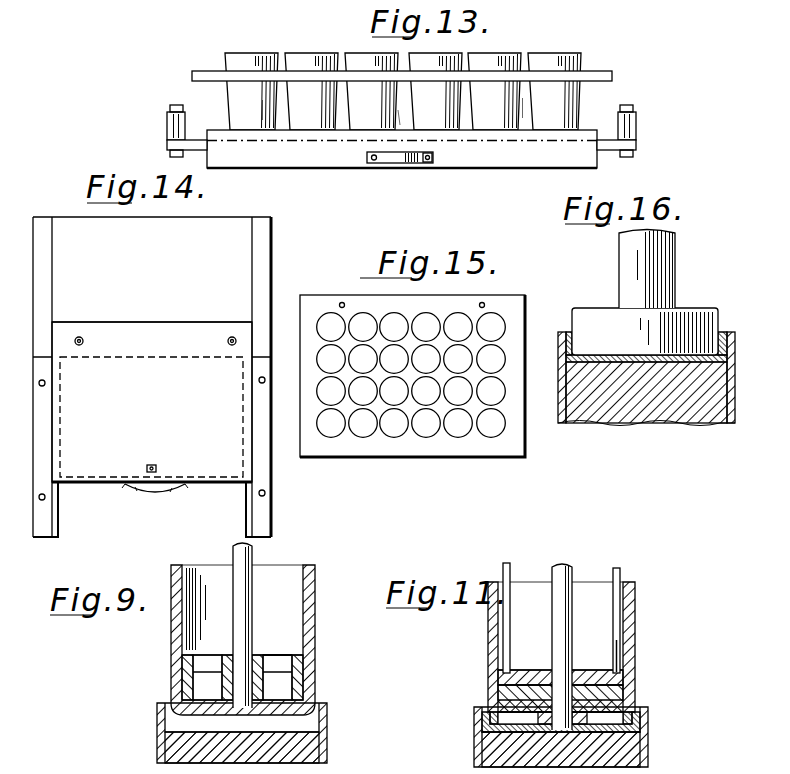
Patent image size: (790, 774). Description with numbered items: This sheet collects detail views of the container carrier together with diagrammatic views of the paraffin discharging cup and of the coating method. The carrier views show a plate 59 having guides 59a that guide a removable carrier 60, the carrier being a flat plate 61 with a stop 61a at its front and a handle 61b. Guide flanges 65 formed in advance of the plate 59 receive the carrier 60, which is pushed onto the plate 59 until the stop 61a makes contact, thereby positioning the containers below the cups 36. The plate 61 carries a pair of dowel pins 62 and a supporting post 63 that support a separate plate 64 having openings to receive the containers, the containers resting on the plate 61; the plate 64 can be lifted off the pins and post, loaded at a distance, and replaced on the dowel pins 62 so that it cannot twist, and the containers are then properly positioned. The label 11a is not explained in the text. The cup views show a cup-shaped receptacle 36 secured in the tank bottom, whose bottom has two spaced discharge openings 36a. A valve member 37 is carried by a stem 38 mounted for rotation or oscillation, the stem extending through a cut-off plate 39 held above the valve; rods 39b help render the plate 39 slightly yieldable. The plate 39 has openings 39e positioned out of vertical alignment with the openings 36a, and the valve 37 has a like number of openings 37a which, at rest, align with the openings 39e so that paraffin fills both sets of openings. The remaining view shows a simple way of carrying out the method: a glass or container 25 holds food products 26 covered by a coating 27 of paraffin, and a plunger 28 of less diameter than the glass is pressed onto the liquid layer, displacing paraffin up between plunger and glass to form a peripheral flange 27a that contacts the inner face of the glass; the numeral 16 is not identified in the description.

In FIG. 14, the tray holder 11a is at (165, 224).
In FIG. 16, the plunger rod 16 is at (673, 269).
In FIG. 13, the glass or container 25 is at (331, 52).
In FIG. 16, the glass or container 25 is at (735, 411).
In FIG. 9, the glass or container 25 is at (157, 720).
In FIG. 11, the glass or container 25 is at (474, 742).
In FIG. 16, the food products 26 is at (663, 428).
In FIG. 9, the food products 26 is at (300, 742).
In FIG. 11, the food products 26 is at (648, 766).
In FIG. 16, the coating 27 is at (690, 362).
In FIG. 11, the coating 27 is at (648, 742).
In FIG. 16, the flange 27a is at (720, 345).
In FIG. 11, the flange 27a is at (486, 717).
In FIG. 16, the plunger 28 is at (645, 331).
In FIG. 9, the cup-shaped receptacle 36 is at (171, 640).
In FIG. 11, the cup-shaped receptacle 36 is at (488, 648).
In FIG. 11, the openings 36a is at (600, 718).
In FIG. 9, the valve member 37 is at (313, 676).
In FIG. 9, the openings 37a is at (275, 688).
In FIG. 9, the stem 38 is at (250, 620).
In FIG. 11, the stem 38 is at (572, 630).
In FIG. 9, the cut-off plate 39 is at (185, 665).
In FIG. 11, the cut-off plate 39 is at (526, 676).
In FIG. 11, the rods 39b is at (634, 566).
In FIG. 9, the openings 39e is at (283, 655).
In FIG. 14, the plate 59 is at (152, 377).
In FIG. 14, the guides 59a is at (48, 310).
In FIG. 13, the removable carrier 60 is at (402, 150).
In FIG. 14, the removable carrier 60 is at (152, 325).
In FIG. 14, the flat plate 61 is at (151, 417).
In FIG. 13, the stop 61a is at (525, 163).
In FIG. 14, the stop 61a is at (102, 484).
In FIG. 13, the handle 61b is at (405, 163).
In FIG. 14, the handle 61b is at (155, 505).
In FIG. 13, the dowel pins 62 is at (278, 108).
In FIG. 14, the dowel pins 62 is at (83, 341).
In FIG. 13, the supporting post 63 is at (400, 118).
In FIG. 14, the supporting post 63 is at (151, 465).
In FIG. 13, the plate 64 is at (622, 66).
In FIG. 15, the plate 64 is at (415, 446).
In FIG. 13, the guide flanges 65 is at (170, 146).
In FIG. 14, the guide flanges 65 is at (50, 526).